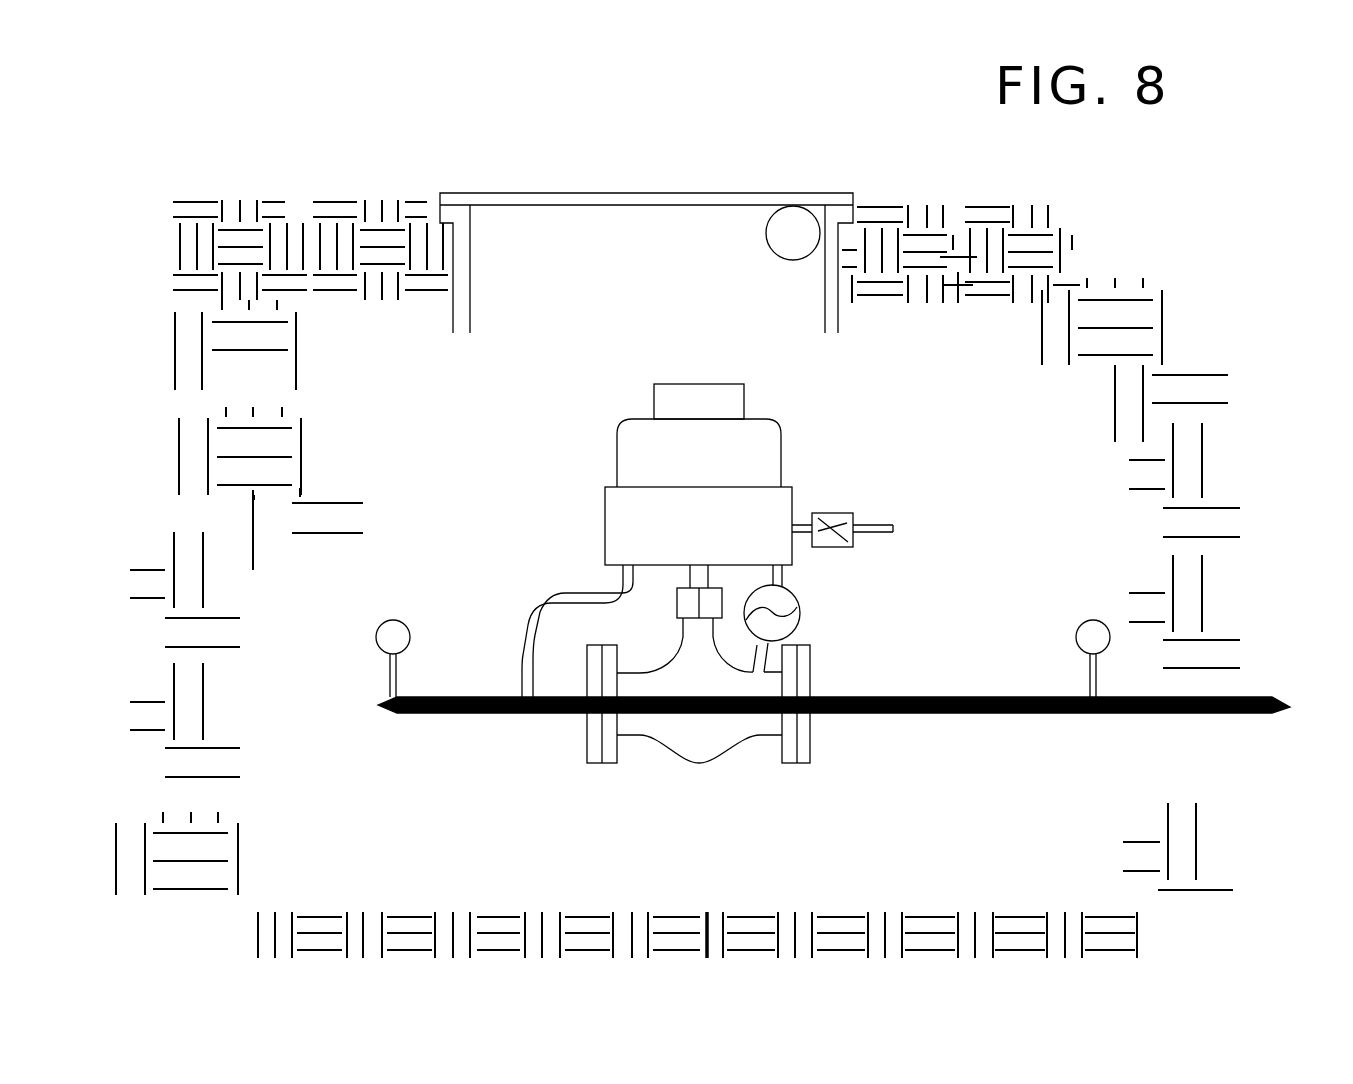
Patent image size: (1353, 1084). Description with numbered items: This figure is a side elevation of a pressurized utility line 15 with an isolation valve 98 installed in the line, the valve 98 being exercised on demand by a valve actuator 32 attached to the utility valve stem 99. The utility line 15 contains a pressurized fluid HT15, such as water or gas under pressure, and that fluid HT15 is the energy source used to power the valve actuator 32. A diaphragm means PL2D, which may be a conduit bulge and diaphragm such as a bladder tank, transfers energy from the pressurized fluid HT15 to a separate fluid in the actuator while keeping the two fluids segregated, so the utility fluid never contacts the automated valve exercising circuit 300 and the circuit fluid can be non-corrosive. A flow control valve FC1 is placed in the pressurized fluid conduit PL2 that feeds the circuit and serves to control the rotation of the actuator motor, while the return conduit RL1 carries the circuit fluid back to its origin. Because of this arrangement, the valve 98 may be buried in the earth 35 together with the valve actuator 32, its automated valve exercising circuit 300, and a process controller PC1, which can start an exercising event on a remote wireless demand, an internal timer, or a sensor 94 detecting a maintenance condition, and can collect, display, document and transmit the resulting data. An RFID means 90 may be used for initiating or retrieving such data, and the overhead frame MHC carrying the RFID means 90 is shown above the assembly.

The pressurized utility line 15 is at (382, 702).
The valve actuator 32 is at (605, 525).
The earth 35 is at (1100, 282).
The RFID means 90 is at (795, 218).
The sensor 94 is at (390, 620).
The isolation valve 98 is at (699, 763).
The valve stem 99 is at (688, 577).
The automated valve exercising circuit 300 is at (781, 442).
The mobile hoist / carrier MHC is at (712, 193).
The process controller PC1 is at (700, 384).
The flow control valve FC1 is at (832, 513).
The return conduit RL1 is at (530, 637).
The pressurized fluid conduit PL2 is at (777, 574).
The pressurized fluid HT15 is at (786, 600).
The diaphragm means PL2D is at (777, 630).